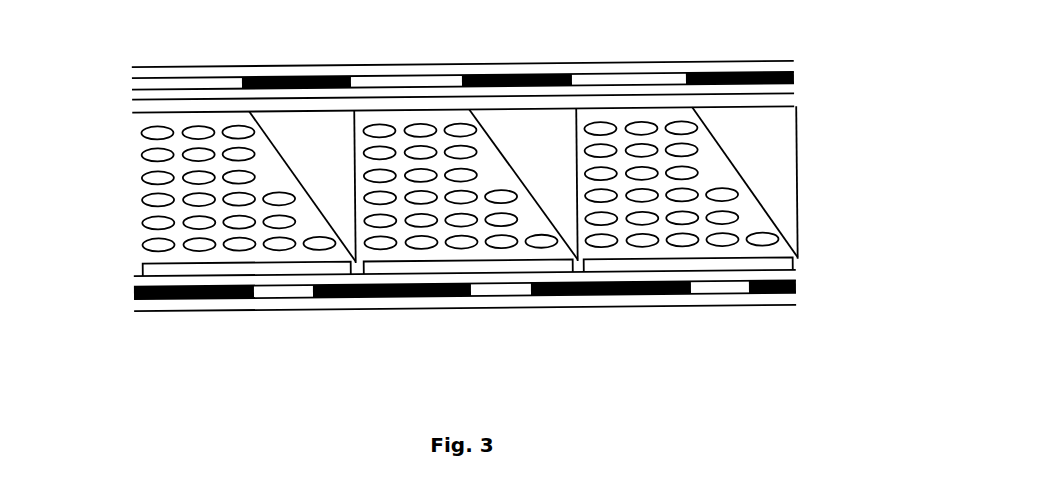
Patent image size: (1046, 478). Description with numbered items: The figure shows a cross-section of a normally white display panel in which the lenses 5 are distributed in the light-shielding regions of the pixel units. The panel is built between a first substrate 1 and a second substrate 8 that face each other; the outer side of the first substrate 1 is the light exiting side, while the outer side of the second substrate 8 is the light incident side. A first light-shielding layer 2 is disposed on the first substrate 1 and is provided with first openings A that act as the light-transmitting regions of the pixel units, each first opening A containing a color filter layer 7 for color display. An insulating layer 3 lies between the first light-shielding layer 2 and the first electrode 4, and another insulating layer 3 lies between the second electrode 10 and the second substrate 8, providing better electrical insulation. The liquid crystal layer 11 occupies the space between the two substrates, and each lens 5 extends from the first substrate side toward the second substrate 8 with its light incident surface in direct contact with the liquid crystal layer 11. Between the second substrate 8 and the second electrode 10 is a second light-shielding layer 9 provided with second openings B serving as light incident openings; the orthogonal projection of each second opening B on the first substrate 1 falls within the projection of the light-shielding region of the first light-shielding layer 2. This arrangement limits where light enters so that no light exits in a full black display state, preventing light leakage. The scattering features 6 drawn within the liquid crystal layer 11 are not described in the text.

The first substrate 1 is at (797, 63).
The first light-shielding layer 2 is at (292, 76).
The insulating layer 3 is at (797, 85).
The first electrode 4 is at (135, 109).
The lens 5 is at (800, 152).
The light scattering particles 6 is at (142, 177).
The color filter layer 7 is at (430, 75).
The second substrate 8 is at (797, 295).
The second light-shielding layer 9 is at (137, 292).
The second electrode 10 is at (142, 272).
The liquid crystal layer 11 is at (497, 189).
The first opening A is at (685, 62).
The second opening B is at (472, 296).